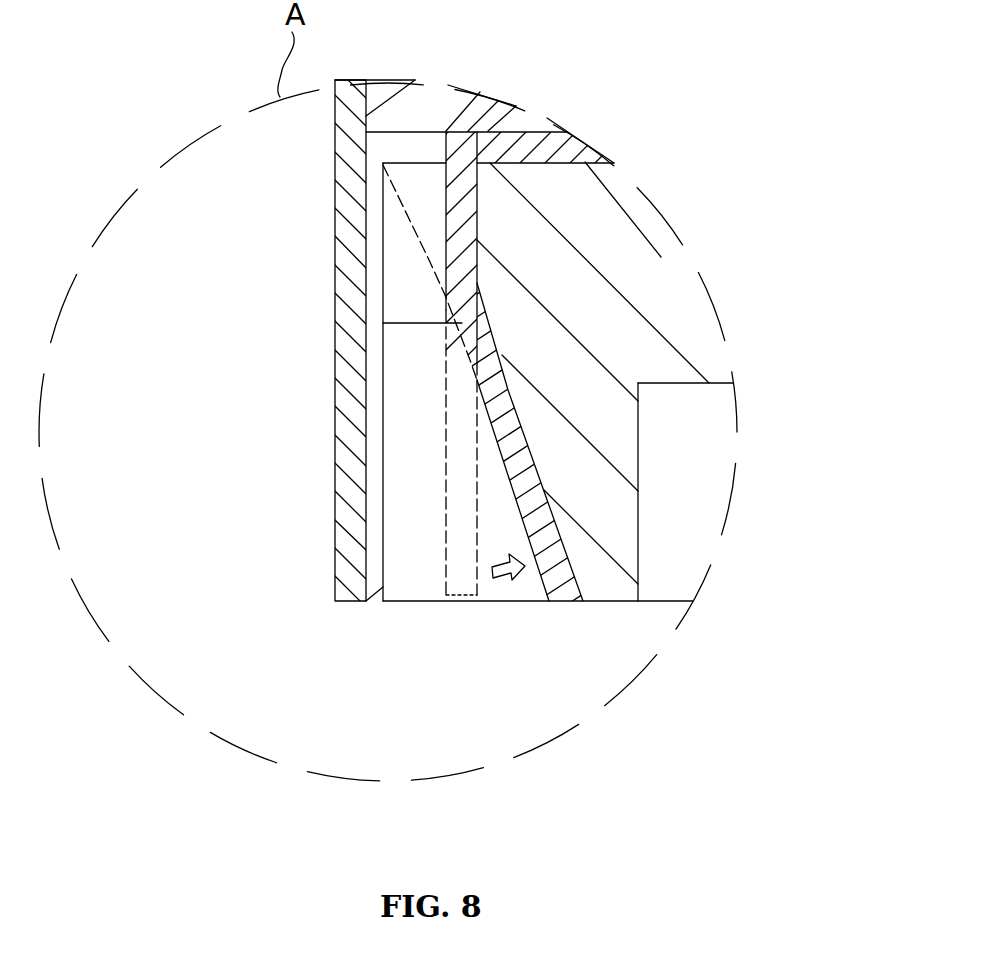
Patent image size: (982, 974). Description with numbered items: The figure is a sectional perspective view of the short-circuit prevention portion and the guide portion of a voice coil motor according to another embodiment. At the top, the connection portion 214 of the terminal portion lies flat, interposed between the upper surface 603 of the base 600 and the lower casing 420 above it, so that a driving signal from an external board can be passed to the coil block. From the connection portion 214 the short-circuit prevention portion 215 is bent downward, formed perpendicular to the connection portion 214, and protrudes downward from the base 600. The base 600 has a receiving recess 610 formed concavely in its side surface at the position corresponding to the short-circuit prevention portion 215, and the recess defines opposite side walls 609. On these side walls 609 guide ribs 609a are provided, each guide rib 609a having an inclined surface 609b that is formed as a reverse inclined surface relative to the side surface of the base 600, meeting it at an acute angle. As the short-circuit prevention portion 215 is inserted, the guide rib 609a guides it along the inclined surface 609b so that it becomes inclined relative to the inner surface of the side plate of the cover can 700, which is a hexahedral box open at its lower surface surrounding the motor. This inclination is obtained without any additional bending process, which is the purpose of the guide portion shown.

The connection portion 214 is at (555, 141).
The short-circuit prevention portion 215 is at (452, 343).
The lower casing 420 is at (491, 92).
The base 600 is at (662, 259).
The upper surface 603 is at (560, 163).
The side walls 609 is at (509, 580).
The guide rib 609a is at (412, 280).
The inclined surface 609b is at (412, 226).
The receiving recess 610 is at (472, 447).
The cover can 700 is at (349, 612).